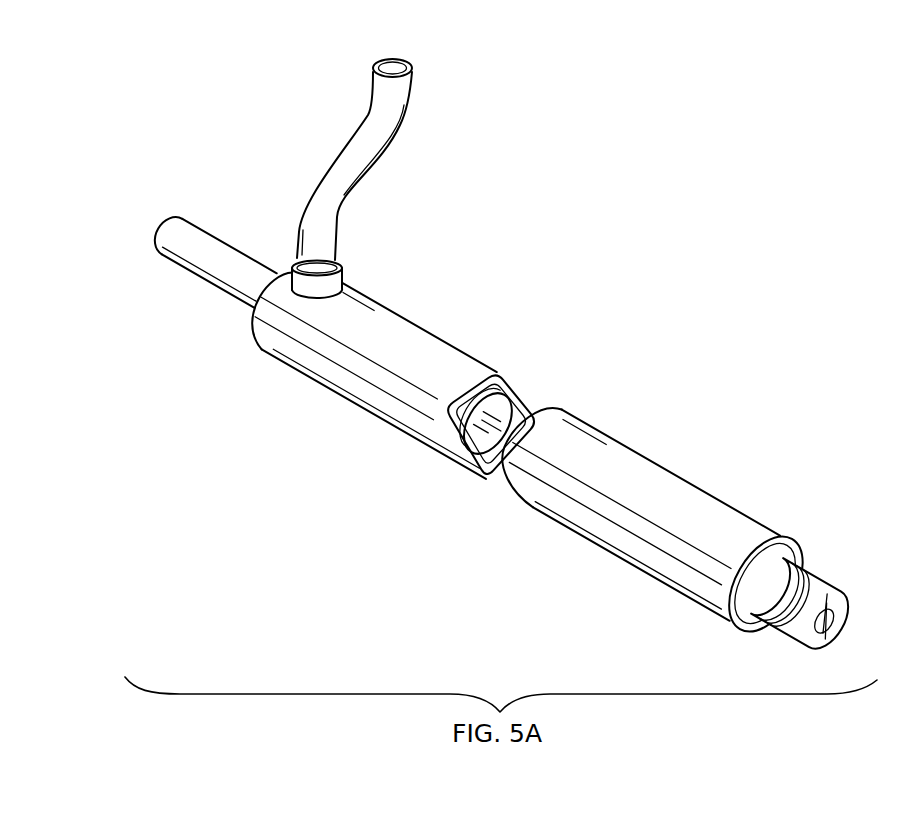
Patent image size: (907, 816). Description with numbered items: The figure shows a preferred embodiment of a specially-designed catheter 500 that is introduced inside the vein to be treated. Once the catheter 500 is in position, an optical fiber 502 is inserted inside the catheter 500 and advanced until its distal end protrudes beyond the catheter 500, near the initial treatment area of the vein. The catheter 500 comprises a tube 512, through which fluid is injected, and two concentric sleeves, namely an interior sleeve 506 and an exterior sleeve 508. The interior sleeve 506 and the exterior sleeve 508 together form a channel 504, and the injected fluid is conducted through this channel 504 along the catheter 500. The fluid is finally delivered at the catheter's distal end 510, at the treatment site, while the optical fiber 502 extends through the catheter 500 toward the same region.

The catheter 500 is at (317, 384).
The optical fiber 502 is at (198, 281).
The channel 504 is at (507, 392).
The interior sleeve 506 is at (463, 417).
The exterior sleeve 508 is at (540, 417).
The distal end 510 is at (802, 550).
The tube 512 is at (386, 166).